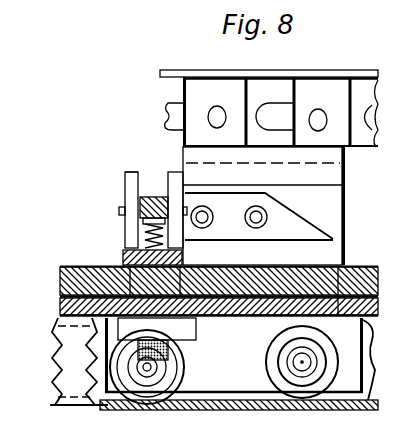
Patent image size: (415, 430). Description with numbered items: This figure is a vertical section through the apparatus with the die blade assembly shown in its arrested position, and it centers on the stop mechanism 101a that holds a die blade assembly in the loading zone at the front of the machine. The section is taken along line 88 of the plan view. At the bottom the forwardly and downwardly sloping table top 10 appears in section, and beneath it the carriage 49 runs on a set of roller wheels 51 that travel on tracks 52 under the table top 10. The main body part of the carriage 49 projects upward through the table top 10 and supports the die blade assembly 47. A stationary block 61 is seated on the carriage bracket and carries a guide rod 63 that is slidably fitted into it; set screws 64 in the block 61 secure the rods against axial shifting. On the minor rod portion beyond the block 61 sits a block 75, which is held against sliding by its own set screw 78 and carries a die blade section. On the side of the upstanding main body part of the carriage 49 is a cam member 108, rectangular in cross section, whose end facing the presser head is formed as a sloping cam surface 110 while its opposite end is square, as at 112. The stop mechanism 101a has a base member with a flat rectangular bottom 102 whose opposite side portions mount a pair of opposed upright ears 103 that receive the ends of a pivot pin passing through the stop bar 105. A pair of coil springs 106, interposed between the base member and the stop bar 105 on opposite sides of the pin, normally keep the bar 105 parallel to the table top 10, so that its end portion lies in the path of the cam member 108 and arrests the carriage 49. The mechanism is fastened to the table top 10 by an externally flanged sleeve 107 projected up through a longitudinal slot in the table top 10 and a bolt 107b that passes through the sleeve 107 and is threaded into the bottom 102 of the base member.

The adjacent figure element 88 is at (9, 10).
The die blade assembly 47 is at (286, 70).
The stationary block 61 is at (190, 90).
The guide rod 63 is at (166, 117).
The set screw 64 is at (221, 108).
The set screw 78 is at (330, 104).
The block 75 is at (371, 140).
The carriage 49 is at (345, 258).
The square end 112 is at (206, 192).
The sloping cam surface 110 is at (291, 216).
The cam member 108 is at (261, 233).
The upright ear 103 is at (127, 173).
The stop mechanism 101a is at (128, 190).
The stop bar 105 is at (150, 196).
The coil spring 106 is at (145, 233).
The bottom 102 is at (123, 255).
The table top 10 is at (60, 300).
The track 52 is at (58, 378).
The externally flanged sleeve 107 is at (187, 333).
The bolt 107b is at (168, 350).
The roller wheel 51 is at (277, 344).